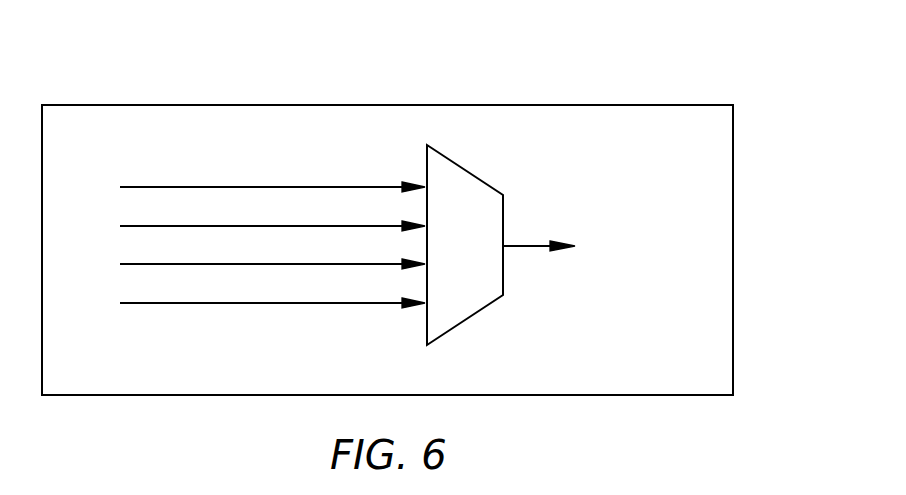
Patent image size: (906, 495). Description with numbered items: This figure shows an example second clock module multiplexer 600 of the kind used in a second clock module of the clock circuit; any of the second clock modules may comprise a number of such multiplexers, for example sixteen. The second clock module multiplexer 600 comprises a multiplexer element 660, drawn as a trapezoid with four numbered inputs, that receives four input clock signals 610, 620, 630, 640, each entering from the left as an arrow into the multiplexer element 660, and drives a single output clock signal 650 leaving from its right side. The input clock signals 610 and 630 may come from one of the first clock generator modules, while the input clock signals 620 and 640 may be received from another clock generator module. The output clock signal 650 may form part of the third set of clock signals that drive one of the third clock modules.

The second clock module multiplexer 600 is at (645, 77).
The input clock signal 610 is at (140, 187).
The input clock signal 620 is at (140, 226).
The input clock signal 630 is at (140, 264).
The input clock signal 640 is at (140, 303).
The output clock signal 650 is at (536, 245).
The multiplexer element 660 is at (465, 170).